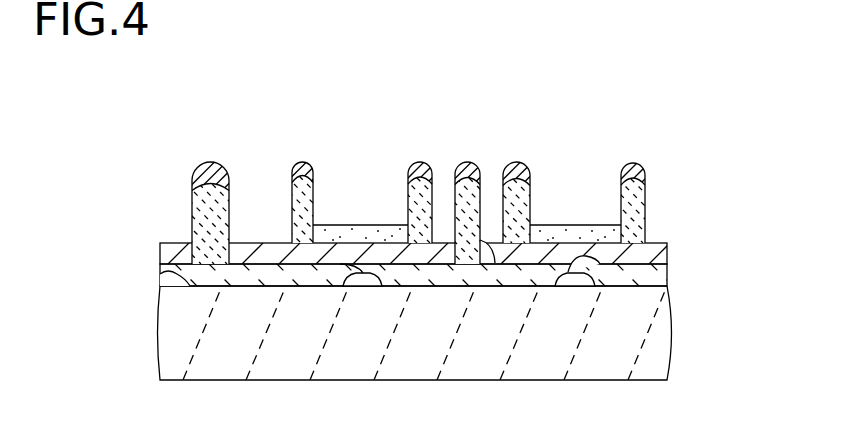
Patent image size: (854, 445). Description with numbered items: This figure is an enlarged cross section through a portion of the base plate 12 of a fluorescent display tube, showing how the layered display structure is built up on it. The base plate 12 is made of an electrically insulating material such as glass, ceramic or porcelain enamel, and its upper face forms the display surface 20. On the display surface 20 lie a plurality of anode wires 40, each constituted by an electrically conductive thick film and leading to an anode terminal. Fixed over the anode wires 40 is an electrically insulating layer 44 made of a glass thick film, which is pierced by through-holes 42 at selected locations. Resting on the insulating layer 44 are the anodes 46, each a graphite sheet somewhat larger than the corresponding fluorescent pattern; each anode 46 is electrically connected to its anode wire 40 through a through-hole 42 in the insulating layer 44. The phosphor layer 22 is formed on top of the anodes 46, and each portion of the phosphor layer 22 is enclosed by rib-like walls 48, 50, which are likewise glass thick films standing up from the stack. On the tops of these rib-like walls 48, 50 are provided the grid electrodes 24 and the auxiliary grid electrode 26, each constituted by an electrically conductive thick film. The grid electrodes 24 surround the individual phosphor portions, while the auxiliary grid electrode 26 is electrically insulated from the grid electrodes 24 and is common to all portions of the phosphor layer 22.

The base plate 12 is at (658, 355).
The display surface 20 is at (160, 274).
The phosphor layer 22 is at (353, 232).
The grid electrode 24 is at (210, 164).
The auxiliary grid electrode 26 is at (470, 166).
The anode wire 40 is at (360, 281).
The through-hole 42 is at (600, 264).
The insulating layer 44 is at (658, 275).
The anode 46 is at (389, 253).
The rib-like wall 48 is at (633, 205).
The rib-like wall 50 is at (495, 263).